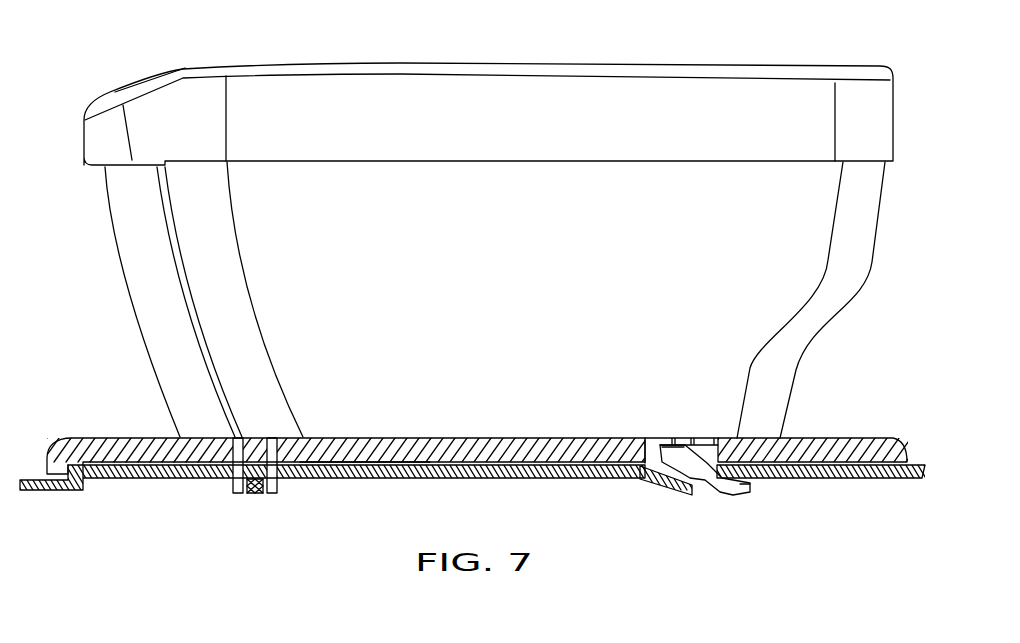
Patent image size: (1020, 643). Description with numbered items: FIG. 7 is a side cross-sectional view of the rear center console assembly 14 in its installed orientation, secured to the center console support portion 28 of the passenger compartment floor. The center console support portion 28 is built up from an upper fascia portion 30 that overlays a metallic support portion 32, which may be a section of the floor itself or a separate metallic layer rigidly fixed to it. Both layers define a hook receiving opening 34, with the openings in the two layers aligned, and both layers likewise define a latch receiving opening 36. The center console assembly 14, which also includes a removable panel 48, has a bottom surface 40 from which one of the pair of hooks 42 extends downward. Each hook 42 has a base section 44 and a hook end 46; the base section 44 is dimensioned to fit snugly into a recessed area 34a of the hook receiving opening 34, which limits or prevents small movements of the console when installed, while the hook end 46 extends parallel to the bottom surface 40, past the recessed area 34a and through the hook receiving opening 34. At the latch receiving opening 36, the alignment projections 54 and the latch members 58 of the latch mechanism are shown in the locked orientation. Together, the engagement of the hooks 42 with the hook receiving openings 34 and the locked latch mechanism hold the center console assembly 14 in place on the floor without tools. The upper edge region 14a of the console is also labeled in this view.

The center console assembly 14 is at (692, 62).
The top edge of top rail 14a is at (335, 63).
The center console support portion 28 is at (474, 471).
The upper fascia portion 30 is at (835, 438).
The metallic support portion 32 is at (830, 478).
The hook receiving openings 34 is at (698, 493).
The recessed areas 34a is at (700, 450).
The latch receiving opening 36 is at (257, 471).
The bottom surface 40 is at (362, 440).
The hooks 42 is at (729, 496).
The base section 44 is at (682, 453).
The hook end 46 is at (748, 485).
The removable panel 48 is at (157, 292).
The alignment projections 54 is at (232, 483).
The latch members 58 is at (257, 493).